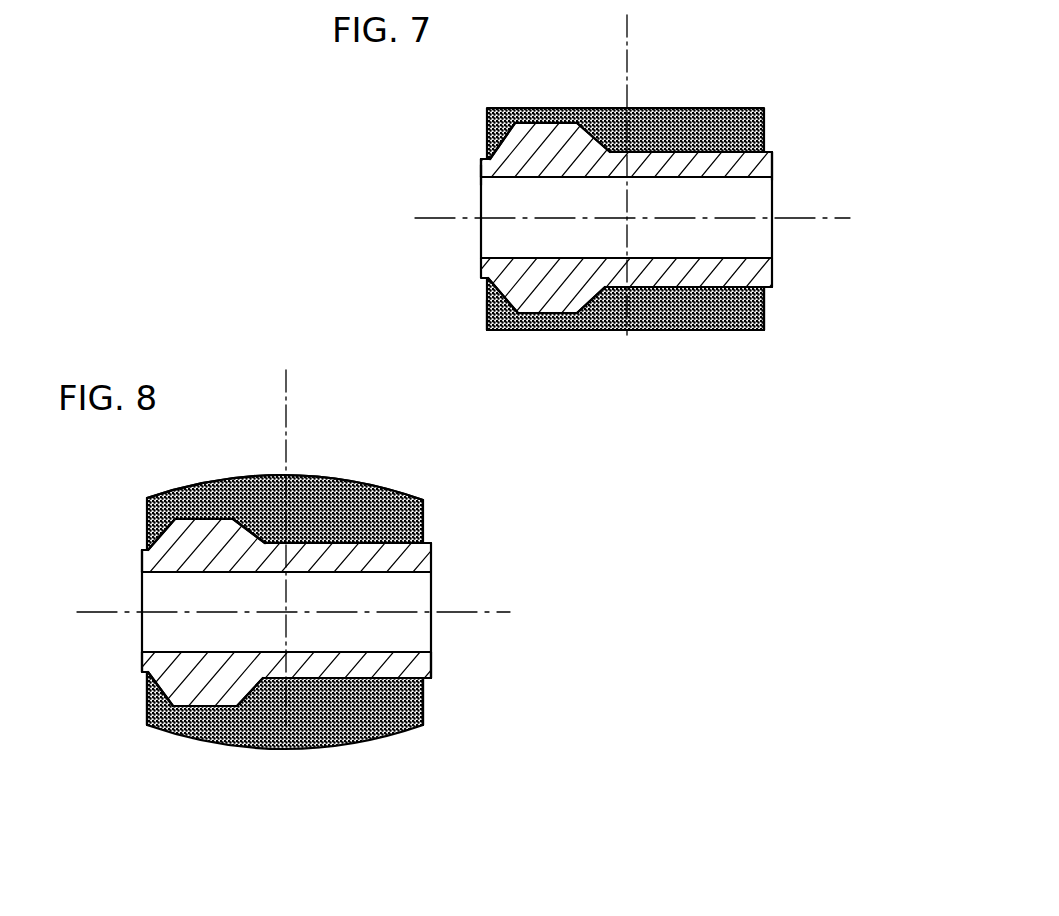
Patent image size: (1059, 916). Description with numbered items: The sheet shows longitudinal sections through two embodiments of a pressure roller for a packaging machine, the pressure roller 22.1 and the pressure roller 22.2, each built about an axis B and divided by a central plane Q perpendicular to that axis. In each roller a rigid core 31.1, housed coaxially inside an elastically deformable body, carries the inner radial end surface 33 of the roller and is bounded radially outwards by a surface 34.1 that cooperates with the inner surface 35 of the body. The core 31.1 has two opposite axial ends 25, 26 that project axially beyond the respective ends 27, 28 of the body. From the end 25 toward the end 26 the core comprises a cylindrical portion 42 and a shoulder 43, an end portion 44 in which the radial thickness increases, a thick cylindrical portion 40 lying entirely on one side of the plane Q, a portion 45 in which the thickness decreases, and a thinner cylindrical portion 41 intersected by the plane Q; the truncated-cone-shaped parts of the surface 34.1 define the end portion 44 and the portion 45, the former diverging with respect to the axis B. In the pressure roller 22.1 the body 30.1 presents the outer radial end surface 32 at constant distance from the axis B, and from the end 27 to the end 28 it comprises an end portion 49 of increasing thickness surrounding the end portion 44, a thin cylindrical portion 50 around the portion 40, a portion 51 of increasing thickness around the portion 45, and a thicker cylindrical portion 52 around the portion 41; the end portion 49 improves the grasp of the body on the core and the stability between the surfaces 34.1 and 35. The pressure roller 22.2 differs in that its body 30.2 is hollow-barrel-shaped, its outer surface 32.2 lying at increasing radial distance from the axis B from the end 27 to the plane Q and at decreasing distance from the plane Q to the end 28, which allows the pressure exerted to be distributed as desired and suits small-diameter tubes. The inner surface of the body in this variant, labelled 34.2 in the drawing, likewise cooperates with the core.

In FIG. 7, the pressure roller 22.1 is at (798, 92).
In FIG. 8, the pressure roller 22.2 is at (138, 745).
In FIG. 7, the axial end of core 25 is at (477, 175).
In FIG. 8, the axial end of core 25 is at (140, 664).
In FIG. 7, the axial end of core 26 is at (777, 166).
In FIG. 8, the axial end of core 26 is at (436, 666).
In FIG. 7, the end of body 27 is at (484, 315).
In FIG. 8, the end of body 27 is at (145, 705).
In FIG. 7, the end of body 28 is at (775, 309).
In FIG. 8, the end of body 28 is at (428, 707).
In FIG. 7, the body 30.1 is at (751, 353).
In FIG. 8, the body 30.2 is at (399, 756).
In FIG. 7, the core 31.1 is at (731, 150).
In FIG. 8, the core 31.1 is at (450, 633).
In FIG. 7, the outer radial end surface 32 is at (643, 334).
In FIG. 8, the outer radial end surface 32.2 is at (184, 477).
In FIG. 7, the inner radial end surface 33 is at (508, 256).
In FIG. 8, the inner radial end surface 33 is at (164, 643).
In FIG. 7, the outer core surface 34.1 is at (618, 291).
In FIG. 8, the inner surface of outer ring 34.2 is at (292, 684).
In FIG. 7, the inner body surface 35 is at (699, 280).
In FIG. 8, the inner body surface 35 is at (345, 668).
In FIG. 7, the core portion 40 is at (545, 139).
In FIG. 8, the core portion 40 is at (206, 538).
In FIG. 7, the core portion 41 is at (660, 151).
In FIG. 8, the core portion 41 is at (328, 550).
In FIG. 7, the cylindrical portion 42 is at (480, 159).
In FIG. 8, the cylindrical portion 42 is at (142, 550).
In FIG. 7, the shoulder 43 is at (485, 157).
In FIG. 8, the shoulder 43 is at (148, 548).
In FIG. 7, the end portion of core 44 is at (497, 151).
In FIG. 8, the end portion of core 44 is at (165, 540).
In FIG. 7, the core portion 45 is at (588, 146).
In FIG. 8, the core portion 45 is at (248, 545).
In FIG. 7, the end portion of body 49 is at (500, 309).
In FIG. 8, the end portion of body 49 is at (155, 714).
In FIG. 7, the body portion 50 is at (553, 327).
In FIG. 8, the body portion 50 is at (210, 721).
In FIG. 7, the body portion 51 is at (601, 306).
In FIG. 8, the body portion 51 is at (258, 702).
In FIG. 7, the body portion 52 is at (673, 311).
In FIG. 8, the body portion 52 is at (328, 701).
In FIG. 7, the axis B is at (805, 218).
In FIG. 8, the axis B is at (448, 612).
In FIG. 7, the central plane Q is at (627, 43).
In FIG. 8, the central plane Q is at (286, 370).